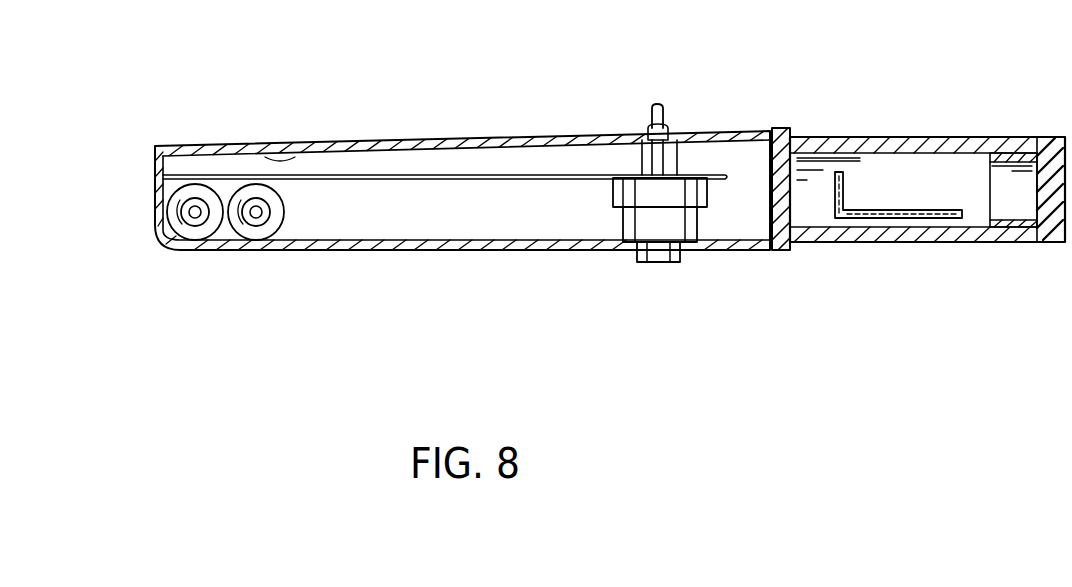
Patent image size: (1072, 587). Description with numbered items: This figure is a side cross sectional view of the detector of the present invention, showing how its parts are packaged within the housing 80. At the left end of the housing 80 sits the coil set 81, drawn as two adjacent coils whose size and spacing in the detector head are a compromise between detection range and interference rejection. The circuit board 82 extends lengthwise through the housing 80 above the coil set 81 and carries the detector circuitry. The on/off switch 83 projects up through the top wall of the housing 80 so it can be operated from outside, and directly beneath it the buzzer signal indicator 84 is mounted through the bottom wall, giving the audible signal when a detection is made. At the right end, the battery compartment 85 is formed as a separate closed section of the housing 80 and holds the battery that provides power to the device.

The housing 80 is at (747, 128).
The coil set 81 is at (252, 246).
The circuit board 82 is at (464, 176).
The on/off switch 83 is at (668, 116).
The buzzer signal indicator 84 is at (683, 253).
The battery compartment 85 is at (912, 180).